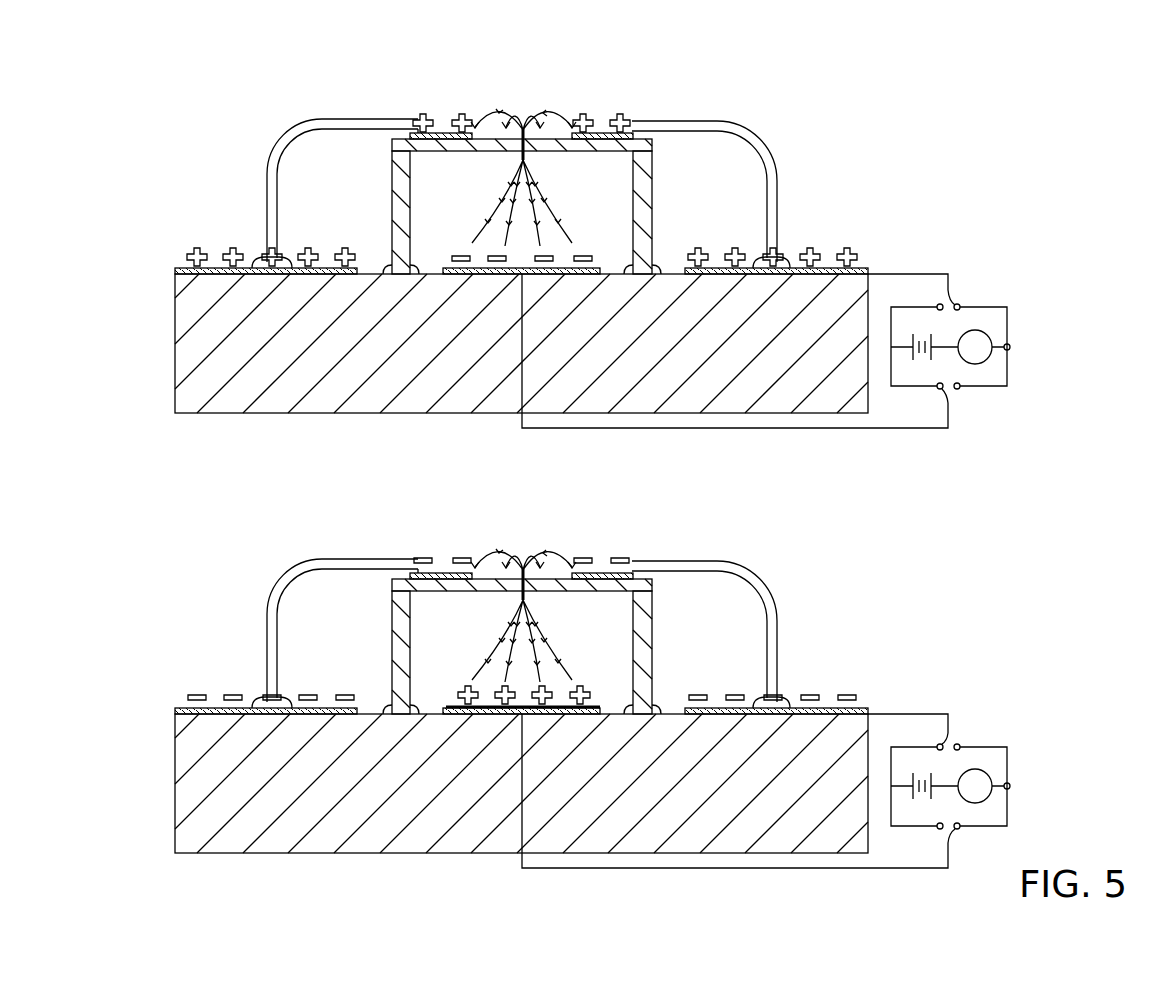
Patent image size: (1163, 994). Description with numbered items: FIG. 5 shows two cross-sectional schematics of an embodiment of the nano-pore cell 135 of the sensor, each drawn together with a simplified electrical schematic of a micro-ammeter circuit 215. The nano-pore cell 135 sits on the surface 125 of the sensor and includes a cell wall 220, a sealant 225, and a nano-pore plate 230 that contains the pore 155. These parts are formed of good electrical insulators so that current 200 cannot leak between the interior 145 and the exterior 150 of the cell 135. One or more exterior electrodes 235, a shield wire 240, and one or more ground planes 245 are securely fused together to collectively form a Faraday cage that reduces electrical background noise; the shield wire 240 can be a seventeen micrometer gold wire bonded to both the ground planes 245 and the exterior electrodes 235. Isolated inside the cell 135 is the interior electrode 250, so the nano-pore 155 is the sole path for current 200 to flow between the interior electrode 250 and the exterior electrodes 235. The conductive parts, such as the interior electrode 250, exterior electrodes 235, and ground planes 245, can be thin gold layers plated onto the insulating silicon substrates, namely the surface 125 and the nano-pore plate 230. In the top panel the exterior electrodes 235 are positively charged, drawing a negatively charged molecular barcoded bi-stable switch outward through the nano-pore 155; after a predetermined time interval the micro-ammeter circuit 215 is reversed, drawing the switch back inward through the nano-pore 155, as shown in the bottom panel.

The surface 125 is at (175, 274).
The nano-pore cell 135 is at (652, 176).
The interior 145 is at (608, 207).
The exterior 150 is at (504, 88).
The pore 155 is at (526, 133).
The current 200 is at (510, 177).
The micro-ammeter circuit 215 is at (975, 345).
The cell wall 220 is at (400, 227).
The sealant 225 is at (383, 267).
The nano-pore plate 230 is at (395, 144).
The exterior electrodes 235 is at (447, 132).
The shield wire 240 is at (268, 236).
The ground planes 245 is at (252, 262).
The interior electrode 250 is at (447, 268).